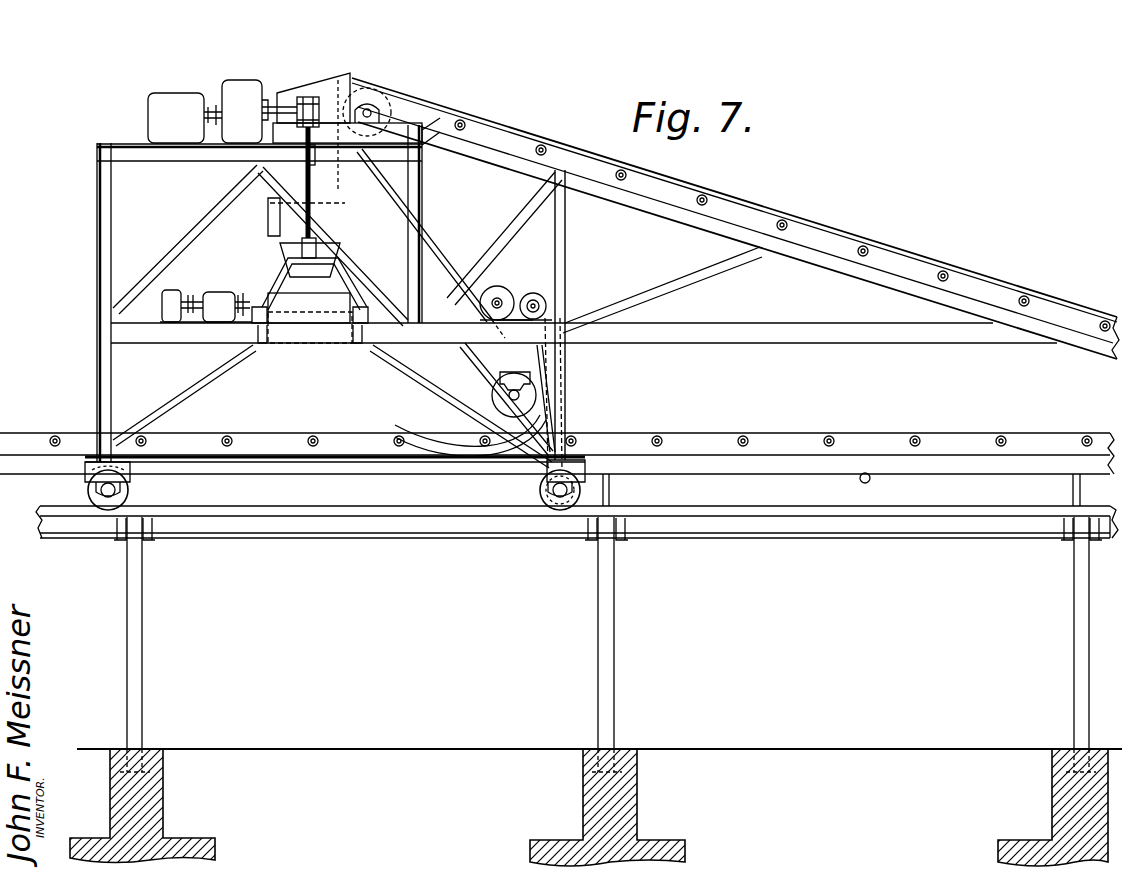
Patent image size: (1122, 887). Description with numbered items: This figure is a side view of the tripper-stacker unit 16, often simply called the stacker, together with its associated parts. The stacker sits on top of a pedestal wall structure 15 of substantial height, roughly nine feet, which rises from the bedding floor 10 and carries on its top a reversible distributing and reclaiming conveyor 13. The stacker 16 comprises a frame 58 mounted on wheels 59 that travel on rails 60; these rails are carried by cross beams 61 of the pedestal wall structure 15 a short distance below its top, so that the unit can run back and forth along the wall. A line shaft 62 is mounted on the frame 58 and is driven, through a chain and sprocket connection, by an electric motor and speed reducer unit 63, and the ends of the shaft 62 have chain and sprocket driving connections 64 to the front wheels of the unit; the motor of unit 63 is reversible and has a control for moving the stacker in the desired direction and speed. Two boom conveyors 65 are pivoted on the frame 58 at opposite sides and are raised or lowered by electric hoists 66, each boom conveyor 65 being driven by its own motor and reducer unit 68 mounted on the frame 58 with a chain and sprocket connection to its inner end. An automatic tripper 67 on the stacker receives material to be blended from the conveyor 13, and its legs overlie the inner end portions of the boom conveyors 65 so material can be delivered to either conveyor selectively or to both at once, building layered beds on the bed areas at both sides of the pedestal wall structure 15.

The bedding floor 10 is at (323, 745).
The distributing and reclaiming conveyor 13 is at (814, 232).
The pedestal wall structure 15 is at (614, 622).
The tripper-stacker unit 16 is at (74, 183).
The frame 58 is at (99, 341).
The wheels 59 is at (128, 495).
The rails 60 is at (338, 508).
The cross beams 61 is at (592, 540).
The line shaft 62 is at (534, 293).
The electric motor and speed reducer unit 63 is at (497, 286).
The chain and sprocket driving connections 64 is at (548, 425).
The boom conveyors 65 is at (298, 305).
The electric hoists 66 is at (176, 90).
The automatic tripper 67 is at (349, 183).
The motor and reducer unit 68 is at (220, 292).